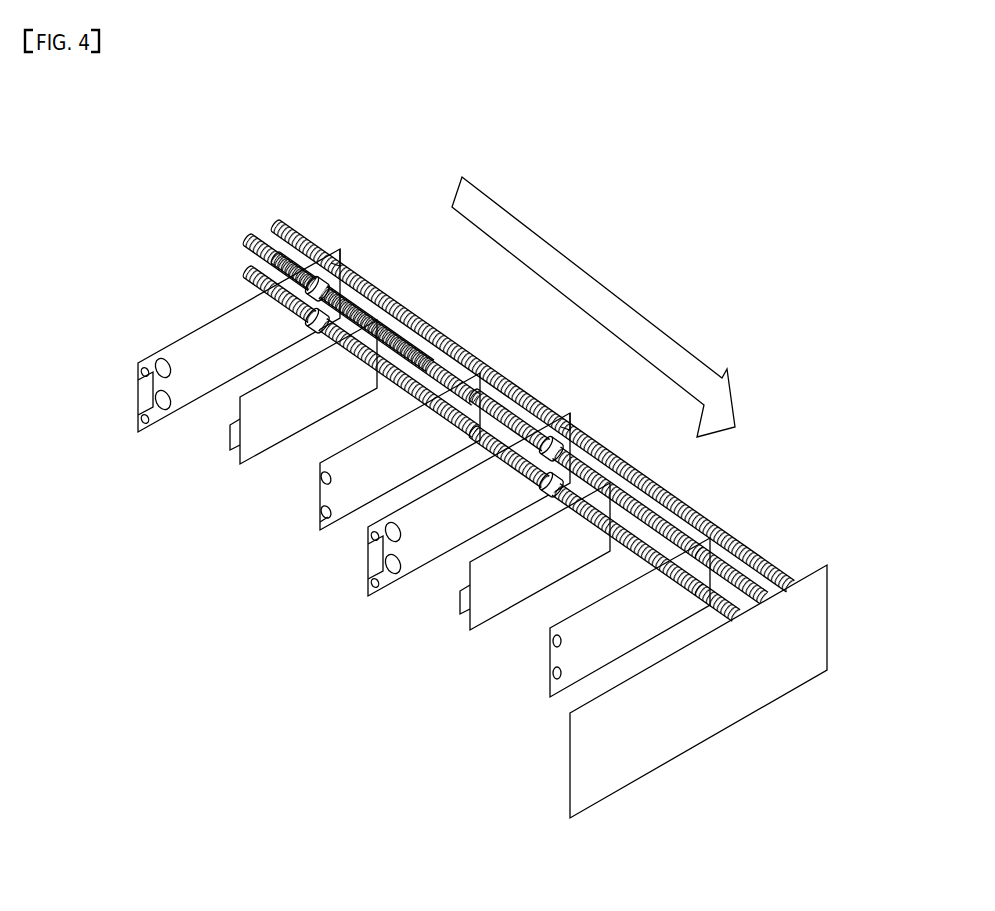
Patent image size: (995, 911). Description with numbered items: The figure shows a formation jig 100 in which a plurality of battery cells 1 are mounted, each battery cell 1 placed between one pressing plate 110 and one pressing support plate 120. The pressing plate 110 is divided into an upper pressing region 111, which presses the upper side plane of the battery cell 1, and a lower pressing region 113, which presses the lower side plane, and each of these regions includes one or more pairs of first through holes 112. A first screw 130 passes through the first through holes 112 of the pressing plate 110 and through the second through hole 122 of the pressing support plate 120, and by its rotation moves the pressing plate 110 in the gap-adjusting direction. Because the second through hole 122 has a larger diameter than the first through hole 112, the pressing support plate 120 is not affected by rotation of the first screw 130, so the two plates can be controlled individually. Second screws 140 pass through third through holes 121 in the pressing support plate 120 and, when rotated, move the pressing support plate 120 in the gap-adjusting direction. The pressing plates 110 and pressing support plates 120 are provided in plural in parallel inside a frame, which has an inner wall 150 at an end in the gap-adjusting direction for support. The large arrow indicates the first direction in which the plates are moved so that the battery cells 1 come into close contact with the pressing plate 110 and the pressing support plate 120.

The formation jig 100 is at (126, 171).
The battery cell 1 is at (239, 462).
The pressing plate 110 is at (466, 535).
The upper pressing region 111 is at (318, 465).
The first through hole 112 is at (318, 512).
The lower pressing region 113 is at (319, 528).
The pressing support plate 120 is at (312, 422).
The third through hole 121 is at (134, 426).
The second through hole 122 is at (318, 280).
The first screw 130 is at (645, 510).
The second screw 140 is at (503, 408).
The inner wall 150 is at (820, 611).